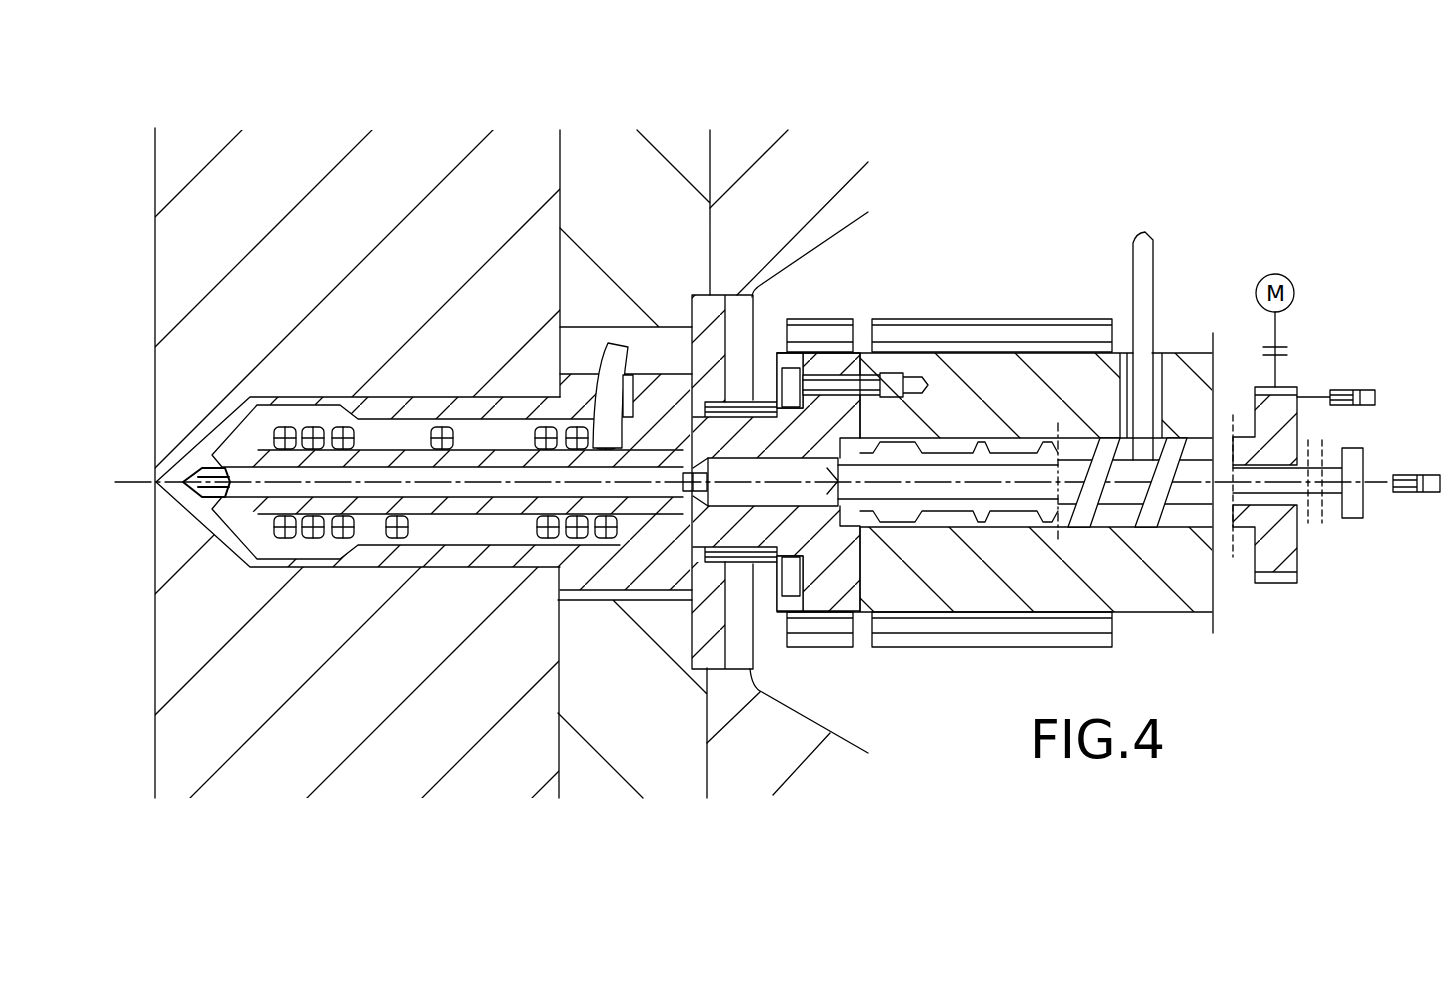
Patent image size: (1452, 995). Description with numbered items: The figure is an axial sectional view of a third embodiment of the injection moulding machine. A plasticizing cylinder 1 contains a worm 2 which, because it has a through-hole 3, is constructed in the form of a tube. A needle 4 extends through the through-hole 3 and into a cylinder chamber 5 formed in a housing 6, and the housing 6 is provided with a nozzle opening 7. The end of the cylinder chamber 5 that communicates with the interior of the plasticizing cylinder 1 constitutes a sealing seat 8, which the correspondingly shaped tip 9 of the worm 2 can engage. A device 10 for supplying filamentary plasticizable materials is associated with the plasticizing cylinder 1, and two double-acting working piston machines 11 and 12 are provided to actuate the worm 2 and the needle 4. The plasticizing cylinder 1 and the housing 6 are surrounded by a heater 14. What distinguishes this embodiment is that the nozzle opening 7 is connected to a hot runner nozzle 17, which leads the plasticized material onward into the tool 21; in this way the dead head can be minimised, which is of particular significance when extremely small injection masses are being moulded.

The plasticizing cylinder 1 is at (1178, 590).
The worm 2 is at (940, 517).
The through-hole 3 is at (990, 513).
The needle 4 is at (953, 477).
The cylinder chamber 5 is at (782, 500).
The housing 6 is at (827, 590).
The nozzle opening 7 is at (683, 478).
The sealing seat 8 is at (848, 450).
The tip 9 is at (893, 503).
The device for supplying filamentary plasticizable materials 10 is at (1155, 357).
The double-acting working piston machine 11 is at (1368, 390).
The double-acting working piston machine 12 is at (1435, 495).
The heater 14 is at (830, 327).
The hot runner nozzle 17 is at (488, 558).
The tool 21 is at (318, 765).